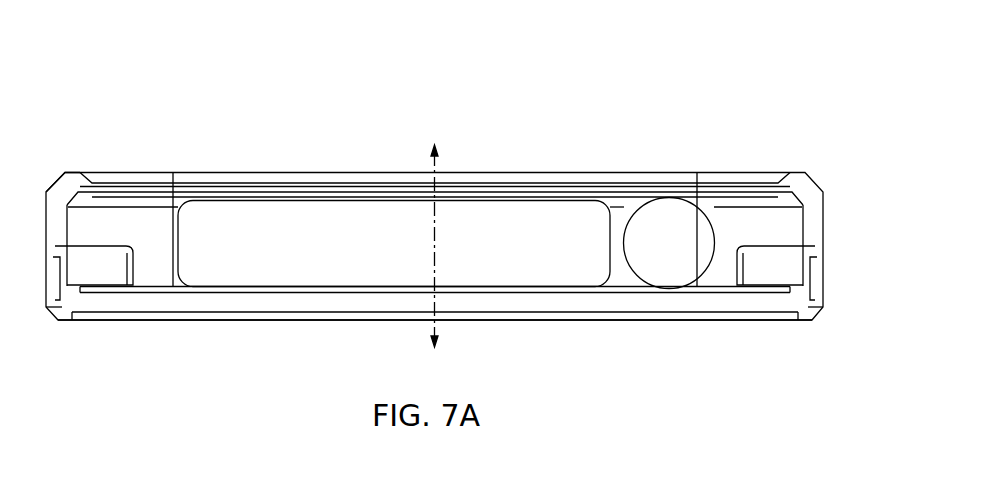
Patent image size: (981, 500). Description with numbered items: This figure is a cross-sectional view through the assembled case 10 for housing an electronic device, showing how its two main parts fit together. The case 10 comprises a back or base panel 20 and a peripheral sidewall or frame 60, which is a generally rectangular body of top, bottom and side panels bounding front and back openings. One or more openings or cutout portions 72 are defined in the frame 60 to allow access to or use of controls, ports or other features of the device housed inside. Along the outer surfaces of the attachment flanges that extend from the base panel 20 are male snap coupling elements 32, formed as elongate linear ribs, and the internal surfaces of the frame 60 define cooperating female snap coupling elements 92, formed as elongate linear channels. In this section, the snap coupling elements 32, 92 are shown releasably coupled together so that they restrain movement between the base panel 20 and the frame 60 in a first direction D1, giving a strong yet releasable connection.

The case 10 is at (728, 95).
The base panel 20 is at (197, 319).
The male snap coupling element 32 is at (75, 268).
The frame 60 is at (65, 170).
The opening 72 is at (540, 212).
The female snap coupling element 92 is at (46, 267).
The first direction D1 is at (433, 243).